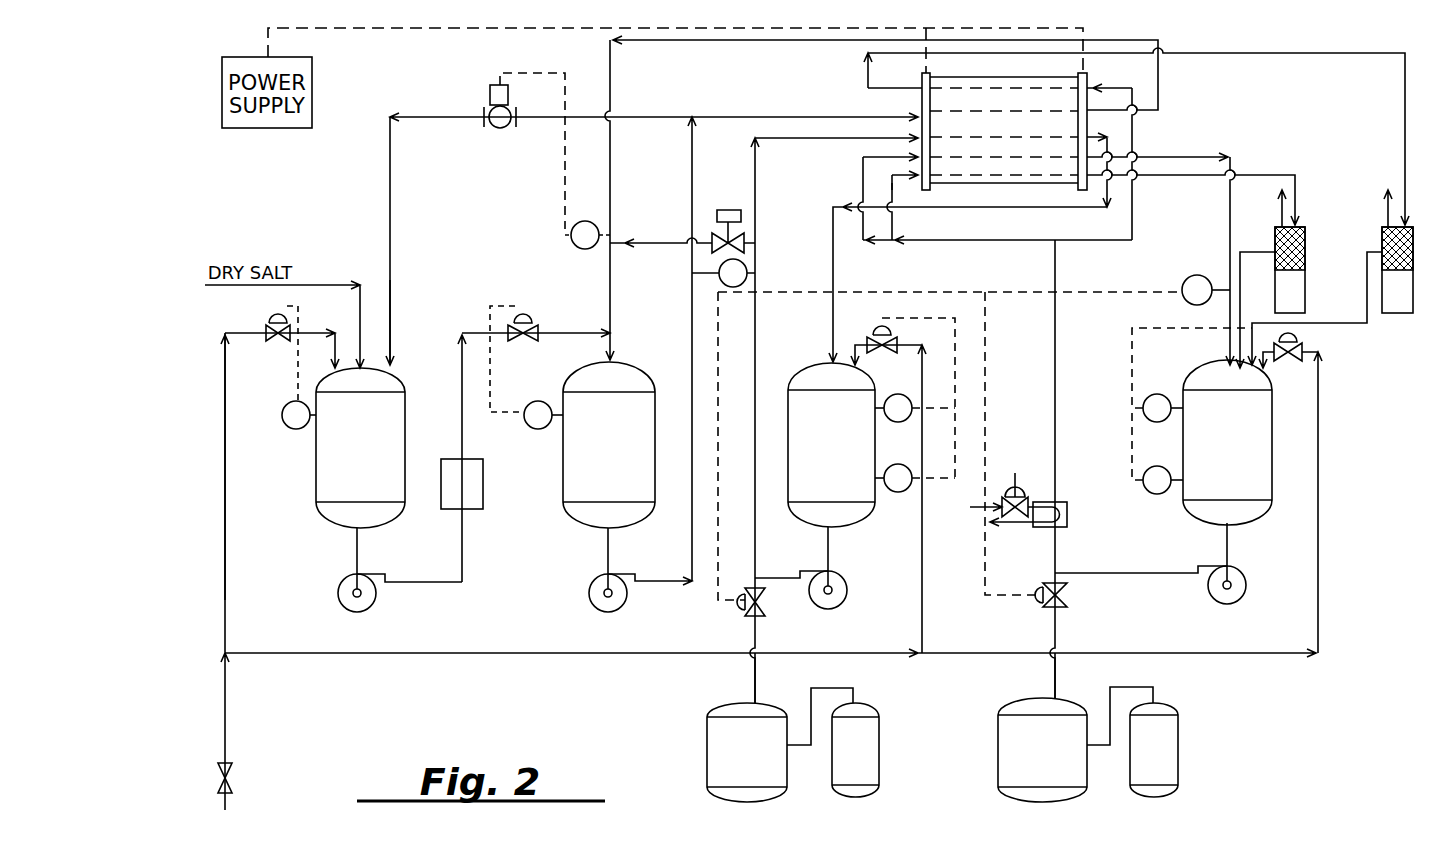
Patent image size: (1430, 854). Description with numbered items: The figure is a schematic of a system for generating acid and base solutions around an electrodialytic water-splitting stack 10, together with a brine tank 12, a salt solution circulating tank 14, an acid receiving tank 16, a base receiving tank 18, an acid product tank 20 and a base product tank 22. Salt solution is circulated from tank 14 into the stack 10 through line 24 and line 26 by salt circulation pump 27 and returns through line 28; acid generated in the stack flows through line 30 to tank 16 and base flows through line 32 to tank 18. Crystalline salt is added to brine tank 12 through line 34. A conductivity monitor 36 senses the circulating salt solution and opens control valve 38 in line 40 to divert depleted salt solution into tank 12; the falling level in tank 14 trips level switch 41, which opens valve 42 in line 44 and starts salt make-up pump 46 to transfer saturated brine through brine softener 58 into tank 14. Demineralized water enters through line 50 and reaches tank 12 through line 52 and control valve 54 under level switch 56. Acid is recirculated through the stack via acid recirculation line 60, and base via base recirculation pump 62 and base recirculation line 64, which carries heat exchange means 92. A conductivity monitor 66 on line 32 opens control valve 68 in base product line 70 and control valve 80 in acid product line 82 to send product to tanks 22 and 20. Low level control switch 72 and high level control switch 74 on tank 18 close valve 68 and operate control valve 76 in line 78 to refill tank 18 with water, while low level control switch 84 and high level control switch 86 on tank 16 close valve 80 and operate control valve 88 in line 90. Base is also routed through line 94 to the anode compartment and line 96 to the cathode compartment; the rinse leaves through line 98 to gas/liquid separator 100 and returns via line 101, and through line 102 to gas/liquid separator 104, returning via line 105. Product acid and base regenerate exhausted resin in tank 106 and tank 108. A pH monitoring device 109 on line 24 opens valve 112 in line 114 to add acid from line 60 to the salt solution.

The electrodialytic water-splitting stack 10 is at (1103, 124).
The brine tank 12 is at (318, 471).
The salt solution circulating tank 14 is at (587, 498).
The acid receiving tank 16 is at (805, 495).
The base receiving tank 18 is at (1205, 497).
The acid product tank 20 is at (705, 740).
The base product tank 22 is at (1003, 743).
The line 24 is at (692, 300).
The line 26 is at (722, 117).
The salt circulation pump 27 is at (615, 600).
The line 28 is at (762, 40).
The line 30 is at (835, 292).
The line 32 is at (1230, 225).
The line 34 is at (390, 320).
The conductivity monitor 36 is at (575, 247).
The control valve 38 is at (490, 110).
The line 40 is at (390, 215).
The level switch 41 is at (535, 401).
The valve 42 is at (535, 325).
The line 44 is at (462, 442).
The salt make-up pump 46 is at (372, 606).
The line 50 is at (225, 720).
The line 52 is at (225, 558).
The control valve 54 is at (292, 327).
The level switch 56 is at (290, 428).
The brine softener 58 is at (475, 500).
The acid recirculation line 60 is at (755, 362).
The base recirculation pump 62 is at (1246, 588).
The base recirculation line 64 is at (863, 170).
The conductivity monitor 66 is at (1205, 275).
The control valve 68 is at (1068, 599).
The base product line 70 is at (1053, 670).
The low level control switch 72 is at (1150, 495).
The high level control switch 74 is at (1155, 395).
The control valve 76 is at (1298, 347).
The line 78 is at (1318, 540).
The control valve 80 is at (750, 613).
The acid product line 82 is at (755, 690).
The low level control switch 84 is at (898, 492).
The high level control switch 86 is at (895, 395).
The control valve 88 is at (900, 338).
The line 90 is at (922, 455).
The heat exchange means 92 is at (1062, 505).
The line 94 is at (892, 183).
The line 96 is at (1135, 137).
The line 98 is at (1247, 175).
The gas/liquid separator 100 is at (1305, 291).
The line 101 is at (1240, 310).
The line 102 is at (1248, 53).
The gas/liquid separator 104 is at (1400, 313).
The line 105 is at (1367, 302).
The tank 106 is at (870, 778).
The tank 108 is at (1178, 777).
The pH monitoring device 109 is at (747, 268).
The valve 112 is at (735, 238).
The line 114 is at (672, 242).